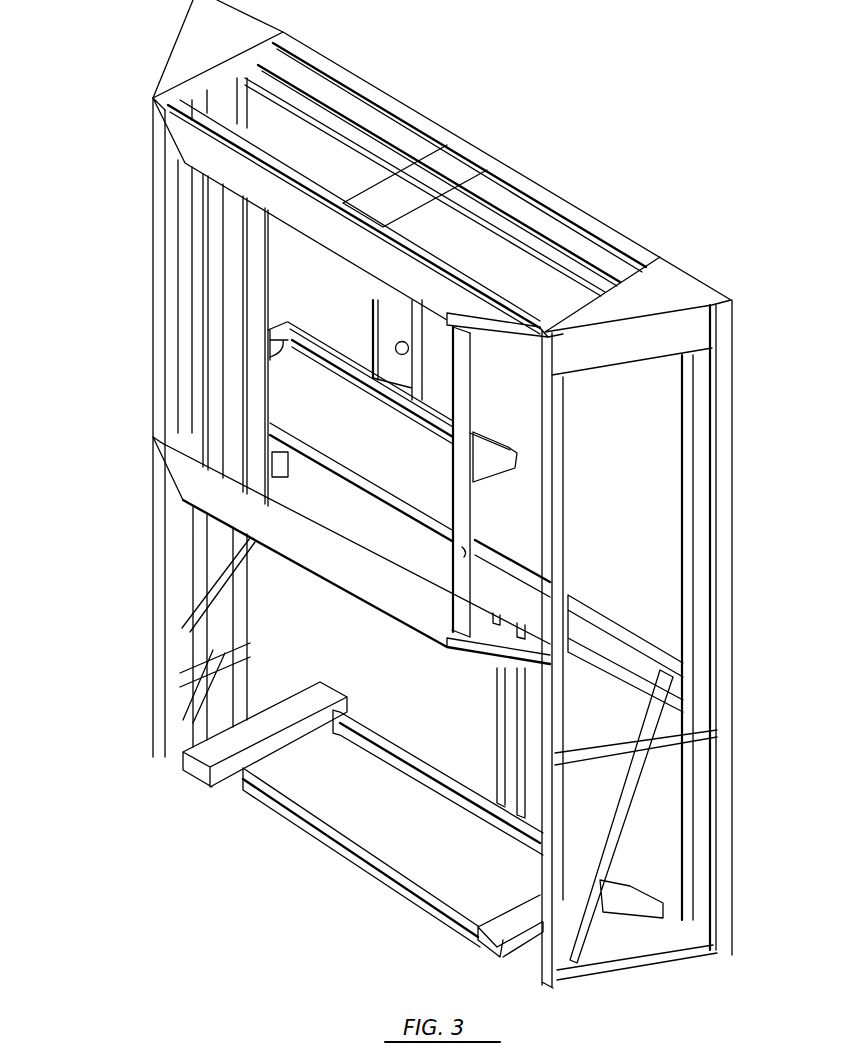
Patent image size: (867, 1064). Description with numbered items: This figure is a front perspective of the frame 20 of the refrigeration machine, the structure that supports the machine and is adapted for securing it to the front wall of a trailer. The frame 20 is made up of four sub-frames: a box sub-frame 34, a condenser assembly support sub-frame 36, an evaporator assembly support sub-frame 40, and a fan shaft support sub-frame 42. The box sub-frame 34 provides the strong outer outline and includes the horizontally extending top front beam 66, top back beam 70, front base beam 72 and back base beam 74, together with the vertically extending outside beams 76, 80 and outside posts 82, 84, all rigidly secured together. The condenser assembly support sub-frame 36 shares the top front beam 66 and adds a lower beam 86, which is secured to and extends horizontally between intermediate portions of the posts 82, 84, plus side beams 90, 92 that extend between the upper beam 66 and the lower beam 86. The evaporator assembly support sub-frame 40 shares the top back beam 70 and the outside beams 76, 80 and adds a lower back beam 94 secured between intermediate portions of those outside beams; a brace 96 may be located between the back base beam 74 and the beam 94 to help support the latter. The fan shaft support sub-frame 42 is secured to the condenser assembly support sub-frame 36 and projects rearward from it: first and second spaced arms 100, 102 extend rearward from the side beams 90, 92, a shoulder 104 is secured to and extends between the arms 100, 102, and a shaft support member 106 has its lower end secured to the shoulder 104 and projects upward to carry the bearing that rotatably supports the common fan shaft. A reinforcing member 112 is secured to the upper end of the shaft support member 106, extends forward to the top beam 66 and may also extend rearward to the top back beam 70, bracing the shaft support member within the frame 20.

The frame 20 is at (500, 100).
The box sub-frame 34 is at (148, 602).
The condenser assembly support sub-frame 36 is at (346, 606).
The evaporator assembly support sub-frame 40 is at (604, 592).
The fan shaft support sub-frame 42 is at (368, 313).
The top front beam 66 is at (237, 173).
The top back beam 70 is at (337, 66).
The front base beam 72 is at (268, 807).
The back base beam 74 is at (440, 787).
The outside beam 76 is at (247, 120).
The outside beam 80 is at (720, 352).
The outside post 82 is at (152, 218).
The outside post 84 is at (560, 433).
The lower beam 86 is at (283, 540).
The side beam 90 is at (212, 268).
The side beam 92 is at (466, 550).
The lower back beam 94 is at (613, 622).
The brace 96 is at (510, 712).
The first arm 100 is at (270, 357).
The second arm 102 is at (493, 477).
The shoulder 104 is at (427, 418).
The shaft support member 106 is at (395, 368).
The reinforcing member 112 is at (428, 170).